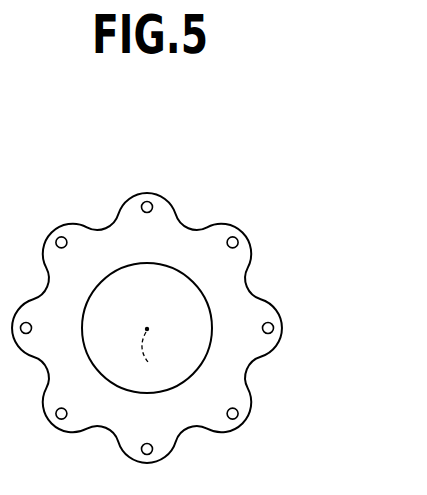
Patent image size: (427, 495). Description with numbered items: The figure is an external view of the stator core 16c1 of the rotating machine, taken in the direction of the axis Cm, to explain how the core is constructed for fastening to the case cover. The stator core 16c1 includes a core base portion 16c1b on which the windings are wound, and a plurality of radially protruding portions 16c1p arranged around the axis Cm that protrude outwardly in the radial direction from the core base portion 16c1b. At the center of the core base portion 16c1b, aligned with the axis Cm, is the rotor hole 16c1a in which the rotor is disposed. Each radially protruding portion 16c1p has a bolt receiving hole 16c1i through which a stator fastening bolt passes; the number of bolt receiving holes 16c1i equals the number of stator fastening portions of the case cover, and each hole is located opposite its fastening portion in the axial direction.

The stator core 16c1 is at (192, 296).
The rotor hole 16c1a is at (165, 268).
The core base portion 16c1b is at (192, 332).
The bolt receiving holes 16c1i is at (273, 331).
The radially protruding portions 16c1p is at (265, 342).
The axis Cm is at (162, 351).